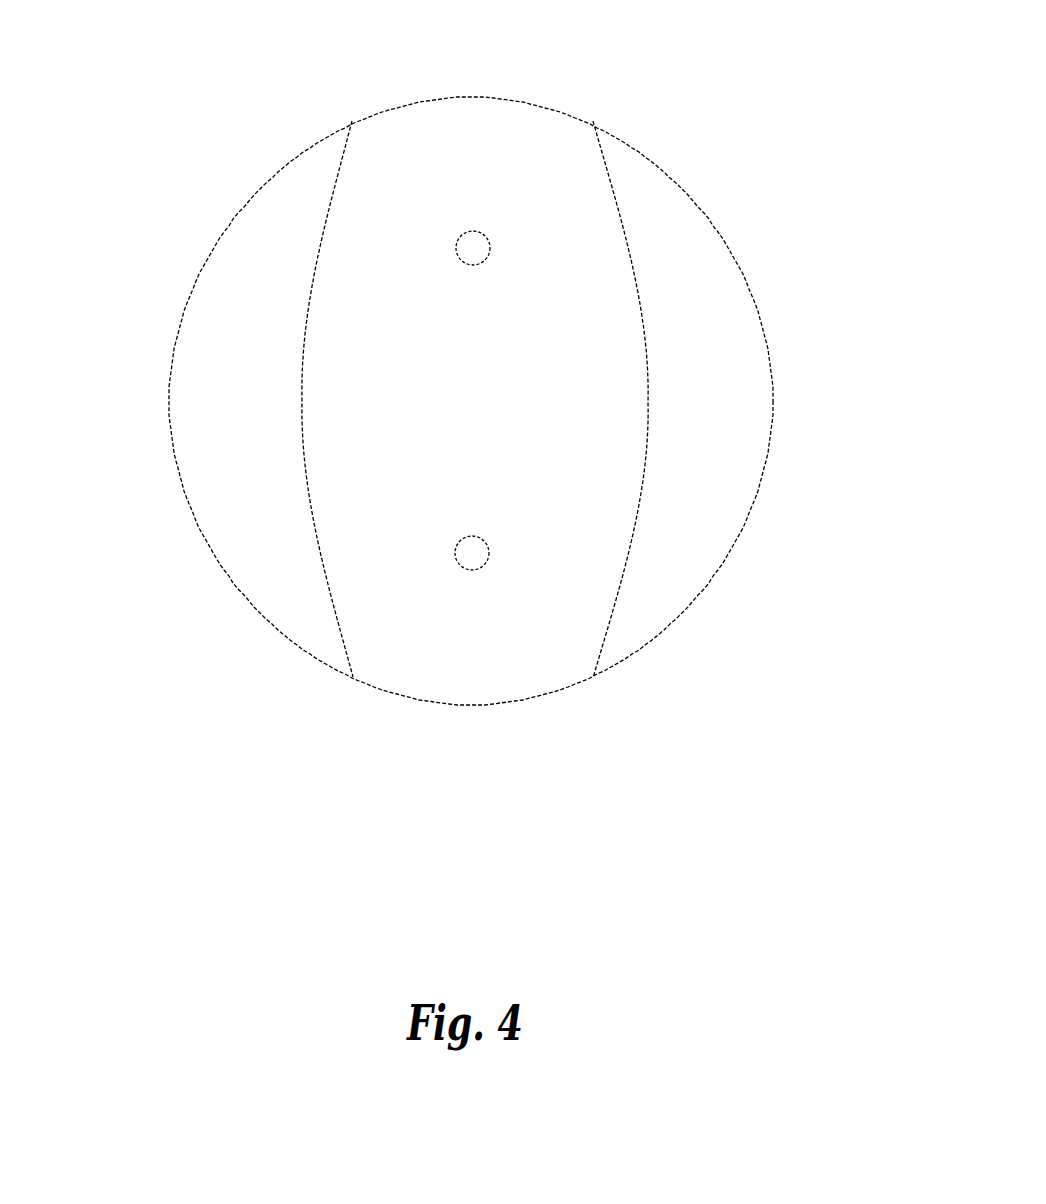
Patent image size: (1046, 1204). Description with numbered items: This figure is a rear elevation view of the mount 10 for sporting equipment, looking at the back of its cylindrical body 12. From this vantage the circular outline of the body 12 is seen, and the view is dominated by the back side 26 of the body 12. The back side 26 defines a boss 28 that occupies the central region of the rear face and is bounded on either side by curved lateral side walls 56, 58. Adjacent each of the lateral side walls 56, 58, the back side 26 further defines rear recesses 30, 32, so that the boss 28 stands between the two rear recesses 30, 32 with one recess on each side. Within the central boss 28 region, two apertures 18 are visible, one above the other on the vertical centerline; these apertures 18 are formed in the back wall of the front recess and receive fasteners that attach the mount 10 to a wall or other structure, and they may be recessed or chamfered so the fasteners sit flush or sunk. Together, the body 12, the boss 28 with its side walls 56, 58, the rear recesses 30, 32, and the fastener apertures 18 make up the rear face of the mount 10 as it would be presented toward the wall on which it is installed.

The mount 10 is at (690, 145).
The cylindrical body 12 is at (715, 330).
The apertures 18 is at (470, 243).
The back side 26 is at (710, 399).
The boss 28 is at (475, 399).
The rear recess 30 is at (698, 512).
The rear recess 32 is at (265, 545).
The lateral side wall 56 is at (648, 402).
The lateral side wall 58 is at (303, 340).